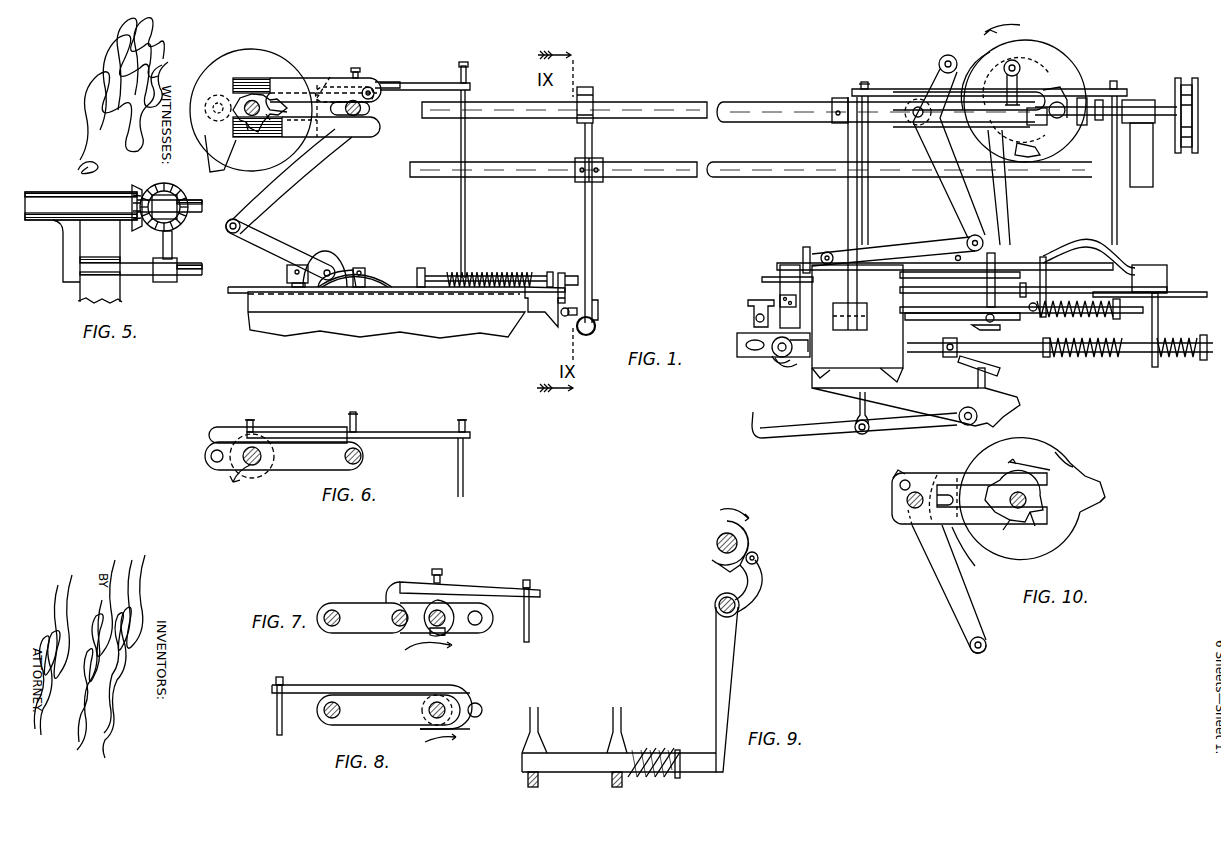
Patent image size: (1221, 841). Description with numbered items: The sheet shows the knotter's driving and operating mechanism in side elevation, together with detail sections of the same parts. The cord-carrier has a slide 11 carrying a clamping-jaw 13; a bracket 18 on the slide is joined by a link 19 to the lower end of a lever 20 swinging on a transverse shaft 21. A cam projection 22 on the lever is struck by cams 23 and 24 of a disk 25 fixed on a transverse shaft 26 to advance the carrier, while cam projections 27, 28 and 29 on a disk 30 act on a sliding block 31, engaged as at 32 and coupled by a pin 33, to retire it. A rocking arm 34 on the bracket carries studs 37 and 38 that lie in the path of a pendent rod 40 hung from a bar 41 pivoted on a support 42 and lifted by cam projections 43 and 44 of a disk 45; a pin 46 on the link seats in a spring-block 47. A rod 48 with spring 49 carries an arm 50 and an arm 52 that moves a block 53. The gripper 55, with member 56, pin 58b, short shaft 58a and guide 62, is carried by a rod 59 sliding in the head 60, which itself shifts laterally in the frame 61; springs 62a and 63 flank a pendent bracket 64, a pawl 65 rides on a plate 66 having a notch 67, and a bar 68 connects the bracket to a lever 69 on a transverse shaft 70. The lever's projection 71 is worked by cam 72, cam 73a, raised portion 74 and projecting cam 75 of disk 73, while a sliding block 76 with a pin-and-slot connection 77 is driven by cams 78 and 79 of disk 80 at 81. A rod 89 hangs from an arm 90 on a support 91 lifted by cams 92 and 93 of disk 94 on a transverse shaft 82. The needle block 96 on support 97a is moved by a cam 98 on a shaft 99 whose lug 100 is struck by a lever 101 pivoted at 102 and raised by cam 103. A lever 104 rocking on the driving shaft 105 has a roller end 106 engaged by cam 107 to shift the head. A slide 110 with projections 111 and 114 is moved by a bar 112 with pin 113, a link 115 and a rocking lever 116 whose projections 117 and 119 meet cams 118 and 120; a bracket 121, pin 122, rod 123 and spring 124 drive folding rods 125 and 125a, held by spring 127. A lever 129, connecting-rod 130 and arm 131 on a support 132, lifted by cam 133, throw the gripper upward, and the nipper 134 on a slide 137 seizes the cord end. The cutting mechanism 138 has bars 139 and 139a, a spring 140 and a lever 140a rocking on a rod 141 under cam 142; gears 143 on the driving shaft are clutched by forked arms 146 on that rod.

In FIG. 1, the slide 11 is at (242, 293).
In FIG. 1, the clamping-jaw 13 is at (556, 310).
In FIG. 1, the bracket 18 is at (328, 268).
In FIG. 1, the rod or link 19 is at (262, 238).
In FIG. 1, the arm or lever 20 is at (308, 186).
In FIG. 1, the transverse shaft 21 is at (354, 117).
In FIG. 6, the transverse shaft 21 is at (362, 456).
In FIG. 1, the cam projection 22 is at (368, 86).
In FIG. 1, the cam 23 is at (322, 78).
In FIG. 1, the cam 24 is at (226, 176).
In FIG. 1, the disk 25 is at (205, 72).
In FIG. 1, the transverse shaft 26 is at (236, 108).
In FIG. 6, the transverse shaft 26 is at (252, 464).
In FIG. 1, the cam projection 27 is at (270, 118).
In FIG. 1, the cam projection 28 is at (247, 126).
In FIG. 1, the cam projection 29 is at (240, 112).
In FIG. 1, the disk 30 is at (244, 104).
In FIG. 1, the sliding block 31 is at (255, 77).
In FIG. 1, the engagement point 32 is at (275, 94).
In FIG. 1, the pin 33 is at (385, 83).
In FIG. 1, the rocking block or arm 34 is at (320, 262).
In FIG. 1, the rod or stud 37 is at (287, 271).
In FIG. 1, the rod or stud 38 is at (364, 270).
In FIG. 1, the pendent rod 40 is at (466, 252).
In FIG. 6, the pendent rod 40 is at (464, 466).
In FIG. 1, the bar 41 is at (440, 83).
In FIG. 6, the bar 41 is at (372, 432).
In FIG. 6, the support 42 is at (300, 472).
In FIG. 6, the cam projection 43 is at (220, 462).
In FIG. 6, the cam projection 44 is at (290, 428).
In FIG. 6, the disk 45 is at (255, 435).
In FIG. 1, the pin 46 is at (241, 227).
In FIG. 1, the spring-block 47 is at (388, 283).
In FIG. 1, the rod 48 is at (548, 270).
In FIG. 1, the spring 49 is at (489, 266).
In FIG. 1, the arm 50 is at (425, 272).
In FIG. 1, the arm 52 is at (568, 268).
In FIG. 1, the block 53 is at (563, 316).
In FIG. 1, the gripper 55 is at (745, 345).
In FIG. 1, the gripper member 56 is at (748, 303).
In FIG. 1, the short shaft 58a is at (778, 362).
In FIG. 1, the pin or rod 58b is at (755, 351).
In FIG. 1, the movable rod 59 is at (1040, 355).
In FIG. 1, the head 60 is at (857, 323).
In FIG. 1, the frame 61 is at (916, 397).
In FIG. 1, the guide 62 is at (793, 362).
In FIG. 1, the spring 62a is at (1090, 356).
In FIG. 1, the spring 63 is at (1185, 358).
In FIG. 1, the pendent bracket 64 is at (1159, 333).
In FIG. 1, the pawl or detent 65 is at (1000, 371).
In FIG. 1, the plate 66 is at (990, 382).
In FIG. 1, the notch 67 is at (936, 355).
In FIG. 1, the arm or bar 68 is at (1072, 252).
In FIG. 10, the lever 69 is at (962, 627).
In FIG. 7, the transverse shaft 70 is at (333, 608).
In FIG. 8, the transverse shaft 70 is at (325, 720).
In FIG. 10, the transverse shaft 70 is at (906, 500).
In FIG. 10, the projection 71 is at (950, 480).
In FIG. 10, the cam 72 is at (975, 566).
In FIG. 10, the disk 73 is at (1063, 558).
In FIG. 1, the cam 73a is at (1068, 462).
In FIG. 10, the raised portion 74 is at (1093, 482).
In FIG. 10, the projecting cam 75 is at (1106, 499).
In FIG. 10, the sliding block 76 is at (927, 480).
In FIG. 10, the pin-and-slot connection 77 is at (888, 482).
In FIG. 10, the cam 78 is at (1040, 496).
In FIG. 10, the cam 79 is at (1012, 525).
In FIG. 10, the disk 80 is at (1036, 527).
In FIG. 10, the engagement point 81 is at (1005, 482).
In FIG. 7, the transverse shaft 82 is at (445, 616).
In FIG. 8, the transverse shaft 82 is at (445, 718).
In FIG. 10, the transverse shaft 82 is at (1028, 503).
In FIG. 1, the rod 89 is at (1118, 240).
In FIG. 7, the rod 89 is at (530, 624).
In FIG. 1, the arm 90 is at (1100, 90).
In FIG. 7, the arm 90 is at (483, 590).
In FIG. 7, the support 91 is at (360, 612).
In FIG. 7, the cam 92 is at (448, 636).
In FIG. 7, the cam 93 is at (423, 652).
In FIG. 7, the disk 94 is at (452, 622).
In FIG. 1, the block 96 is at (780, 300).
In FIG. 1, the support 97a is at (780, 270).
In FIG. 1, the cam 98 is at (784, 323).
In FIG. 1, the shaft 99 is at (945, 322).
In FIG. 1, the lug 100 is at (1000, 328).
In FIG. 1, the lever 101 is at (1003, 196).
In FIG. 1, the pivot 102 is at (1060, 100).
In FIG. 1, the cam 103 is at (1041, 153).
In FIG. 1, the lever 104 is at (846, 195).
In FIG. 1, the shaft 105 is at (748, 104).
In FIG. 5, the shaft 105 is at (202, 207).
In FIG. 9, the shaft 105 is at (738, 547).
In FIG. 1, the upper end of lever 106 is at (1030, 92).
In FIG. 1, the cam 107 is at (1042, 98).
In FIG. 1, the slide 110 is at (945, 267).
In FIG. 1, the projection 111 is at (803, 252).
In FIG. 1, the bar 112 is at (827, 252).
In FIG. 1, the pin 113 is at (957, 255).
In FIG. 1, the projection 114 is at (993, 265).
In FIG. 1, the link 115 is at (890, 249).
In FIG. 1, the rocking lever 116 is at (950, 196).
In FIG. 1, the projection 117 is at (938, 76).
In FIG. 1, the cam 118 is at (977, 58).
In FIG. 1, the projection 119 is at (905, 120).
In FIG. 1, the cam 120 is at (1020, 57).
In FIG. 1, the bracket 121 is at (1046, 272).
In FIG. 1, the pin 122 is at (1045, 318).
In FIG. 1, the rod 123 is at (1033, 311).
In FIG. 1, the spring 124 is at (1093, 313).
In FIG. 1, the rod 125 is at (965, 280).
In FIG. 1, the rod 125a is at (1021, 297).
In FIG. 1, the spring 127 is at (1025, 278).
In FIG. 1, the lever 129 is at (780, 438).
In FIG. 1, the connecting-rod 130 is at (856, 415).
In FIG. 8, the connecting-rod 130 is at (277, 725).
In FIG. 1, the arm 131 is at (856, 92).
In FIG. 8, the arm 131 is at (333, 675).
In FIG. 8, the support 132 is at (408, 722).
In FIG. 8, the cam 133 is at (470, 732).
In FIG. 1, the nipper 134 is at (760, 279).
In FIG. 1, the slide 137 is at (1186, 291).
In FIG. 9, the cutting mechanism 138 is at (619, 728).
In FIG. 1, the bar 139 is at (588, 333).
In FIG. 9, the bar 139 is at (688, 775).
In FIG. 1, the bar 139a is at (596, 322).
In FIG. 9, the bar 139a is at (548, 775).
In FIG. 9, the spring 140 is at (654, 755).
In FIG. 1, the lever 140a is at (593, 263).
In FIG. 9, the lever 140a is at (728, 678).
In FIG. 1, the shaft or rod 141 is at (648, 165).
In FIG. 5, the shaft or rod 141 is at (188, 280).
In FIG. 9, the shaft or rod 141 is at (740, 610).
In FIG. 1, the cam 142 is at (594, 92).
In FIG. 9, the cam 142 is at (706, 545).
In FIG. 5, the gears 143 is at (131, 188).
In FIG. 5, the arms 146 is at (174, 244).